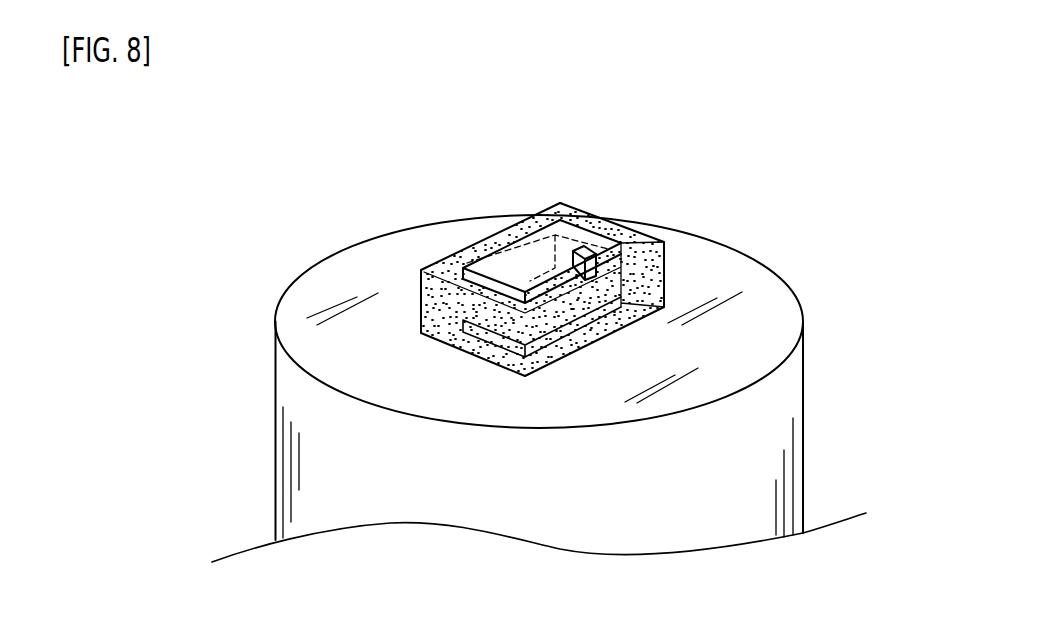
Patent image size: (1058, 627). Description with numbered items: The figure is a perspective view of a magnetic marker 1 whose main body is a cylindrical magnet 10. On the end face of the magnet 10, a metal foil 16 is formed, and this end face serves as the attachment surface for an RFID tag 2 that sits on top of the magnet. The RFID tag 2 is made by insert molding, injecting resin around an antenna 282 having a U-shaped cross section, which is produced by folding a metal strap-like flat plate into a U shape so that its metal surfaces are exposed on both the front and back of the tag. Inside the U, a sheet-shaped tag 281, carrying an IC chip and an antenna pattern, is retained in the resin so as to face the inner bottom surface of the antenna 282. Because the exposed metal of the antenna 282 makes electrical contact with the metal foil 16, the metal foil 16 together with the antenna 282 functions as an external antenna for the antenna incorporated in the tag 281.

The magnetic marker 1 is at (574, 367).
The RFID tag 2 is at (562, 245).
The magnet 10 is at (502, 517).
The metal foil 16 is at (772, 320).
The tag 281 is at (573, 262).
The antenna 282 is at (513, 262).